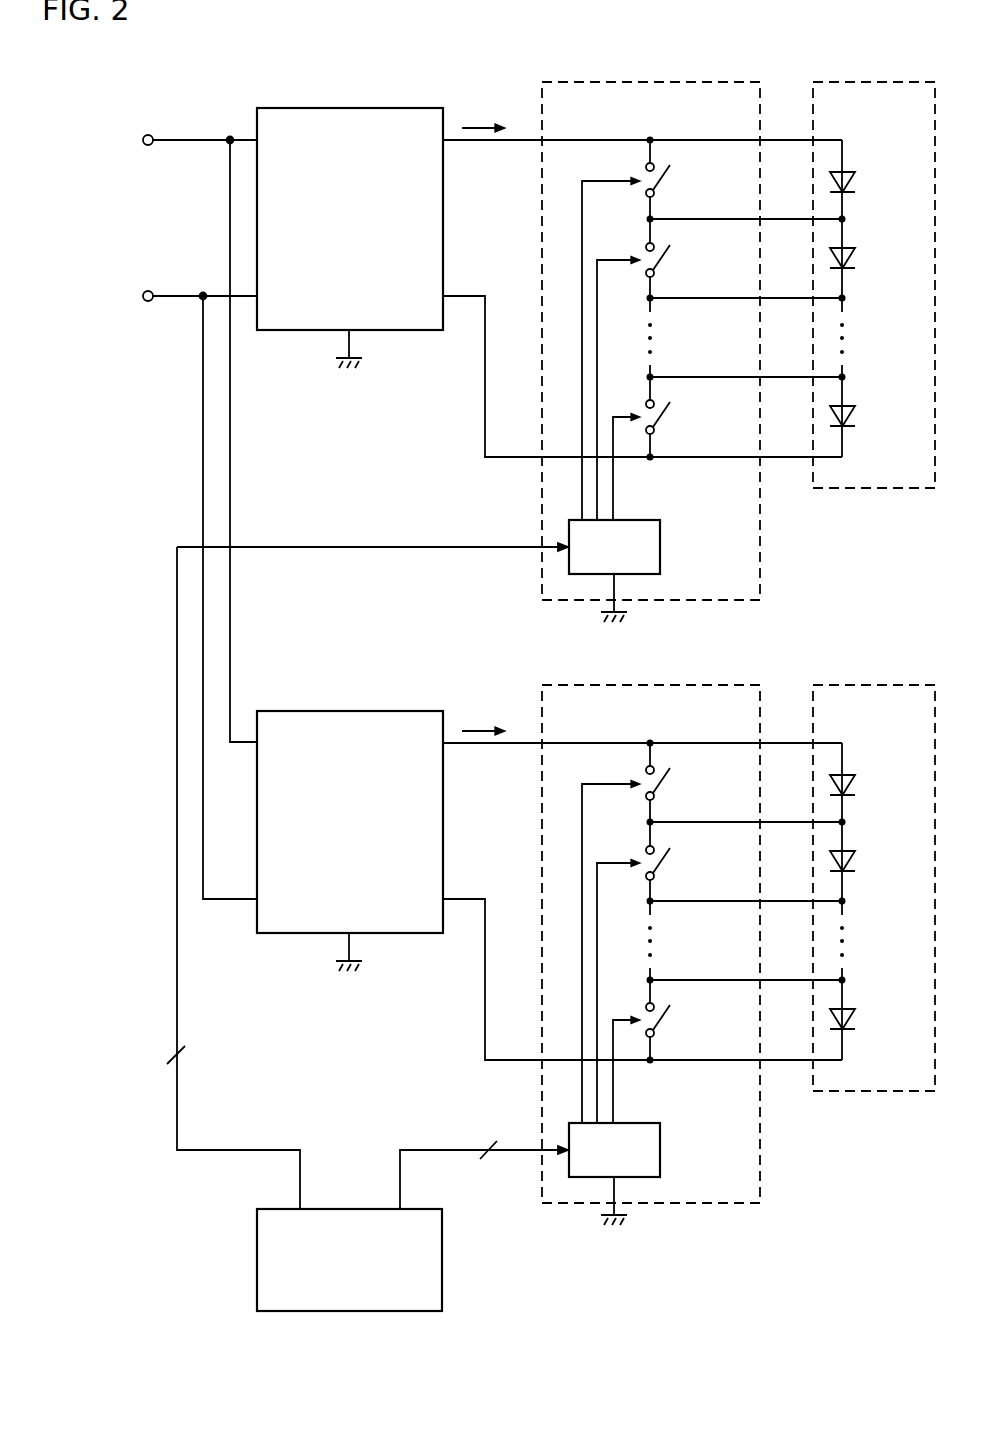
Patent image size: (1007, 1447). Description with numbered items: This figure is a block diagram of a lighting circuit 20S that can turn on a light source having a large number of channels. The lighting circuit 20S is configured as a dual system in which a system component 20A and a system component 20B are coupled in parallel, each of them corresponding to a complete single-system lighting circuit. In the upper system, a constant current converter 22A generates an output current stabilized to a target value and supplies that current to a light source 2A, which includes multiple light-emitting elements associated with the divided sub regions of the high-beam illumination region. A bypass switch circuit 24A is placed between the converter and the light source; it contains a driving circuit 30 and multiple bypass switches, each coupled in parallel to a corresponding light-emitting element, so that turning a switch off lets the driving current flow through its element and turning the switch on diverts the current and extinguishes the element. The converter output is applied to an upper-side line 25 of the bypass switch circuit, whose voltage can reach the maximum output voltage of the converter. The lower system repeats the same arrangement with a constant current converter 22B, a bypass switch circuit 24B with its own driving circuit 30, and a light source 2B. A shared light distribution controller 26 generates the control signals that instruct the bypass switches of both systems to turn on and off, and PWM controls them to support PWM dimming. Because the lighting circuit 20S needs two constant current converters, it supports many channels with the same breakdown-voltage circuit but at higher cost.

The system component A 20A is at (146, 94).
The system component B 20B is at (146, 661).
The lighting circuit 20S is at (491, 704).
The constant current converter 22A is at (342, 108).
The constant current converter 22B is at (342, 711).
The bypass switch circuit 24A is at (688, 82).
The bypass switch circuit 24B is at (688, 685).
The light source 2A is at (886, 82).
The light source 2B is at (886, 685).
The upper-side line 25 is at (603, 140).
The light distribution controller 26 is at (319, 1260).
The driving circuit 30 is at (635, 520).